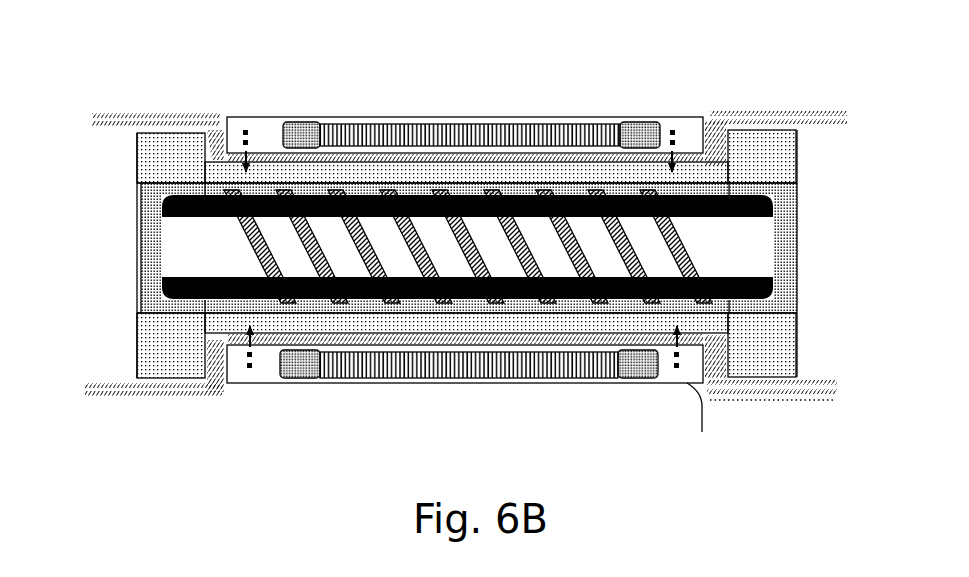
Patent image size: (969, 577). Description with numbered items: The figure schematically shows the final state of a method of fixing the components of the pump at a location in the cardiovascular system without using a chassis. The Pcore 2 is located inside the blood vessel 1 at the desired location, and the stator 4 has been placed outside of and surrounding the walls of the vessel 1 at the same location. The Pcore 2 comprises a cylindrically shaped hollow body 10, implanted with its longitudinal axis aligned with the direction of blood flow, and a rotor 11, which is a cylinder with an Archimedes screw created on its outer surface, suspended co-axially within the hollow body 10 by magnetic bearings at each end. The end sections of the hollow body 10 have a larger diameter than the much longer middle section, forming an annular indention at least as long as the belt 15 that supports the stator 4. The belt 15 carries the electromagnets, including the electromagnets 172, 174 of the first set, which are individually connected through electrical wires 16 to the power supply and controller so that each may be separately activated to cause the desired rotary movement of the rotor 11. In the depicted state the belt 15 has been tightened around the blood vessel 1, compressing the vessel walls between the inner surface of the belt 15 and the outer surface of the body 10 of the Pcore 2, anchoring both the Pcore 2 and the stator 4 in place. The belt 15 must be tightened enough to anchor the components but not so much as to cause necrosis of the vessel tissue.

The blood vessel 1 is at (745, 118).
The Pcore 2 is at (818, 228).
The stator 4 is at (481, 92).
The hollow body 10 is at (148, 232).
The rotor 11 is at (178, 275).
The belt 15 is at (258, 120).
The electrical wires 16 is at (700, 408).
The electromagnet 172 is at (552, 132).
The electromagnet 174 is at (540, 372).